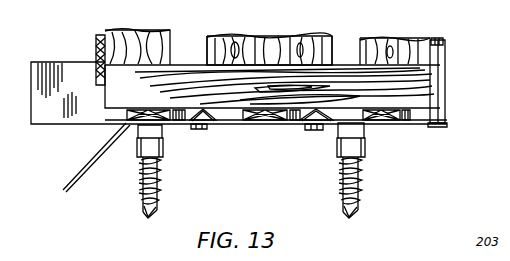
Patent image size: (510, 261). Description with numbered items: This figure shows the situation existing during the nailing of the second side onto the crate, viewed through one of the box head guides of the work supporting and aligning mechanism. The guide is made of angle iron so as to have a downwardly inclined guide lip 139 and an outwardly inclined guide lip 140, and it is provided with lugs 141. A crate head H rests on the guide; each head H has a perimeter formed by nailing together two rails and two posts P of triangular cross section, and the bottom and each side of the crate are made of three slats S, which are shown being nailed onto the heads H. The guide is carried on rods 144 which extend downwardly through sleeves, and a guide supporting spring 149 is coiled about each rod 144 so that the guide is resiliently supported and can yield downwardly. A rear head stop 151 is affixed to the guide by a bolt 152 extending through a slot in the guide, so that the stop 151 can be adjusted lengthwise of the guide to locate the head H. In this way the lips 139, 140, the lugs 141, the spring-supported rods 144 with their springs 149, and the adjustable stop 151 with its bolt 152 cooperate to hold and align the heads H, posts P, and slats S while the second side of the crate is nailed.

The downwardly inclined guide lip 139 is at (68, 176).
The outwardly inclined guide lip 140 is at (55, 66).
The lugs 141 is at (206, 122).
The rods 144 is at (144, 208).
The guide supporting spring 149 is at (160, 186).
The rear head stop 151 is at (445, 92).
The bolt 152 is at (443, 40).
The posts P is at (183, 73).
The heads H is at (290, 40).
The slats S is at (276, 120).